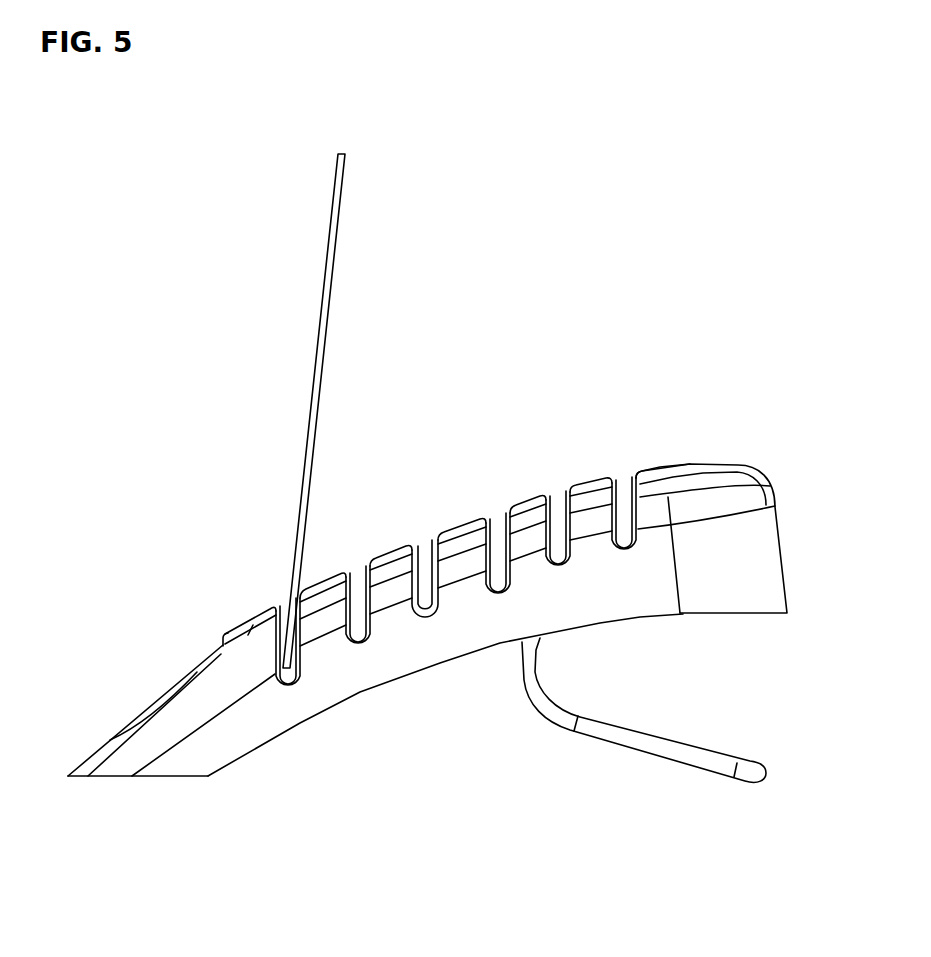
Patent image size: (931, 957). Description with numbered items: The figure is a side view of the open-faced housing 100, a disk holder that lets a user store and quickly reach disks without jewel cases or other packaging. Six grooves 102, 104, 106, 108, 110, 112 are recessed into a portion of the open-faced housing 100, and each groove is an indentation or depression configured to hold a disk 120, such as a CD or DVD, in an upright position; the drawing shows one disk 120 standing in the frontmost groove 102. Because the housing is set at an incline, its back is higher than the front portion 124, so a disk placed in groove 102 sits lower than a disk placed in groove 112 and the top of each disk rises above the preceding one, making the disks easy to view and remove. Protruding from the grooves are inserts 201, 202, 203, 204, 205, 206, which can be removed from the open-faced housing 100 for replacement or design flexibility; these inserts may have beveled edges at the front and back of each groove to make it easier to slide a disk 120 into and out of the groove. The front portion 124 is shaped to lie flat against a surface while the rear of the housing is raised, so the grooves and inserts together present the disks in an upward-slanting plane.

The open-faced housing 100 is at (777, 568).
The groove 102 is at (289, 690).
The groove 104 is at (358, 649).
The groove 106 is at (425, 619).
The groove 108 is at (498, 598).
The groove 110 is at (558, 571).
The groove 112 is at (624, 556).
The disk 120 is at (328, 273).
The front portion 124 is at (88, 764).
The insert 201 is at (287, 596).
The insert 202 is at (357, 563).
The insert 203 is at (423, 540).
The insert 204 is at (490, 513).
The insert 205 is at (562, 495).
The insert 206 is at (625, 481).